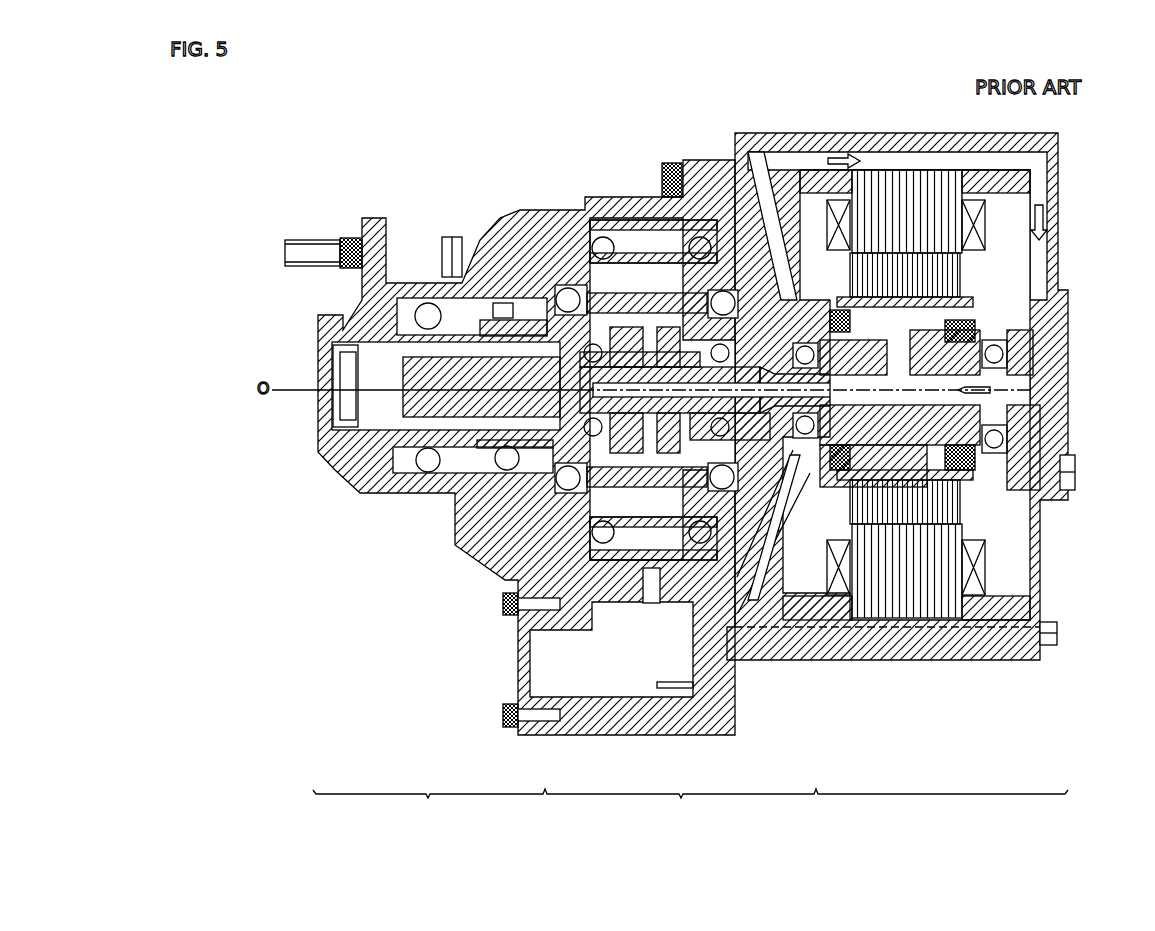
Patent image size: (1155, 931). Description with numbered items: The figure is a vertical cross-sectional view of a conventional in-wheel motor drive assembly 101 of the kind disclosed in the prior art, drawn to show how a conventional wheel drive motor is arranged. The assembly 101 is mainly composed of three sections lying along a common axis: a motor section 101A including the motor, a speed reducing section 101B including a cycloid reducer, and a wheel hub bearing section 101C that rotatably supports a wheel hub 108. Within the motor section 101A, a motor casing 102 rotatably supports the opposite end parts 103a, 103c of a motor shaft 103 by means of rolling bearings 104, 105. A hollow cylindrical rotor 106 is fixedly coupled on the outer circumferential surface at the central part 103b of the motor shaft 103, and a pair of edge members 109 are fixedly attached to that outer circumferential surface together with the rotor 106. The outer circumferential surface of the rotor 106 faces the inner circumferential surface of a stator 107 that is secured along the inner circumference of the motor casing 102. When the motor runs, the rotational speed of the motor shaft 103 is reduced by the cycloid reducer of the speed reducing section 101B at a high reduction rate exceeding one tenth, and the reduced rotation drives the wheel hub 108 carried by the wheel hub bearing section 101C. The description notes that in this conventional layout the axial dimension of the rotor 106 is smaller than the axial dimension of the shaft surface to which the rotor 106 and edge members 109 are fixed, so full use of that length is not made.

The in-wheel motor drive assembly 101 is at (289, 156).
The motor section 101A is at (896, 488).
The speed reducing section 101B is at (766, 491).
The wheel hub bearing section 101C is at (446, 528).
The motor casing 102 is at (923, 640).
The motor shaft 103 is at (957, 477).
The end part of motor shaft 103a is at (1010, 430).
The central part of motor shaft 103b is at (1000, 362).
The end part of motor shaft 103c is at (790, 420).
The rolling bearing 104 is at (1005, 447).
The rolling bearing 105 is at (813, 415).
The rotor 106 is at (950, 274).
The stator 107 is at (956, 211).
The wheel hub 108 is at (362, 483).
The edge members 109 is at (973, 532).